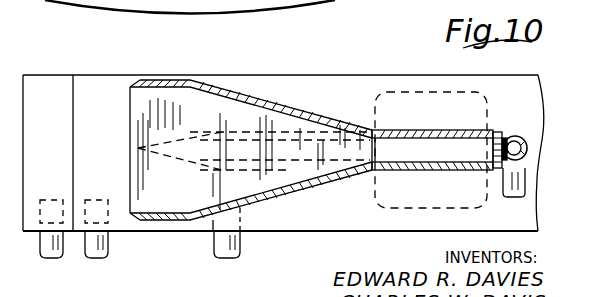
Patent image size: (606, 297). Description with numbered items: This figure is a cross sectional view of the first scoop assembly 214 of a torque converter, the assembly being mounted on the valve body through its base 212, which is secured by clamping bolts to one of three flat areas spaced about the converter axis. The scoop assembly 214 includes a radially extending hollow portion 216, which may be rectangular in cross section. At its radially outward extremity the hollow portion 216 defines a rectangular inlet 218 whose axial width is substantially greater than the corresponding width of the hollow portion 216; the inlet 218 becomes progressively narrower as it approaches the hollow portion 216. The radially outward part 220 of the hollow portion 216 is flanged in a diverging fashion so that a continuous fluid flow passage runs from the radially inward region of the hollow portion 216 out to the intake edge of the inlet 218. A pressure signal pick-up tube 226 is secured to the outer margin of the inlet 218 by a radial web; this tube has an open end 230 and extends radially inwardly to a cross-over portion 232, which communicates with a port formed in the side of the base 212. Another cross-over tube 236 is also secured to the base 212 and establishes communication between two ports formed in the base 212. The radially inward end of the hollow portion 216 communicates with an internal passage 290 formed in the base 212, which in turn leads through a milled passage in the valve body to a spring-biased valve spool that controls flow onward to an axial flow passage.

The base 212 is at (308, 58).
The first scoop assembly 214 is at (400, 128).
The radially extending hollow portion 216 is at (421, 130).
The rectangular inlet 218 is at (249, 55).
The radially outward part 220 is at (300, 172).
The pressure signal pick-up tube 226 is at (505, 136).
The open end 230 is at (130, 118).
The cross-over portion 232 is at (502, 185).
The cross-over tube 236 is at (58, 258).
The internal passage 290 is at (382, 127).